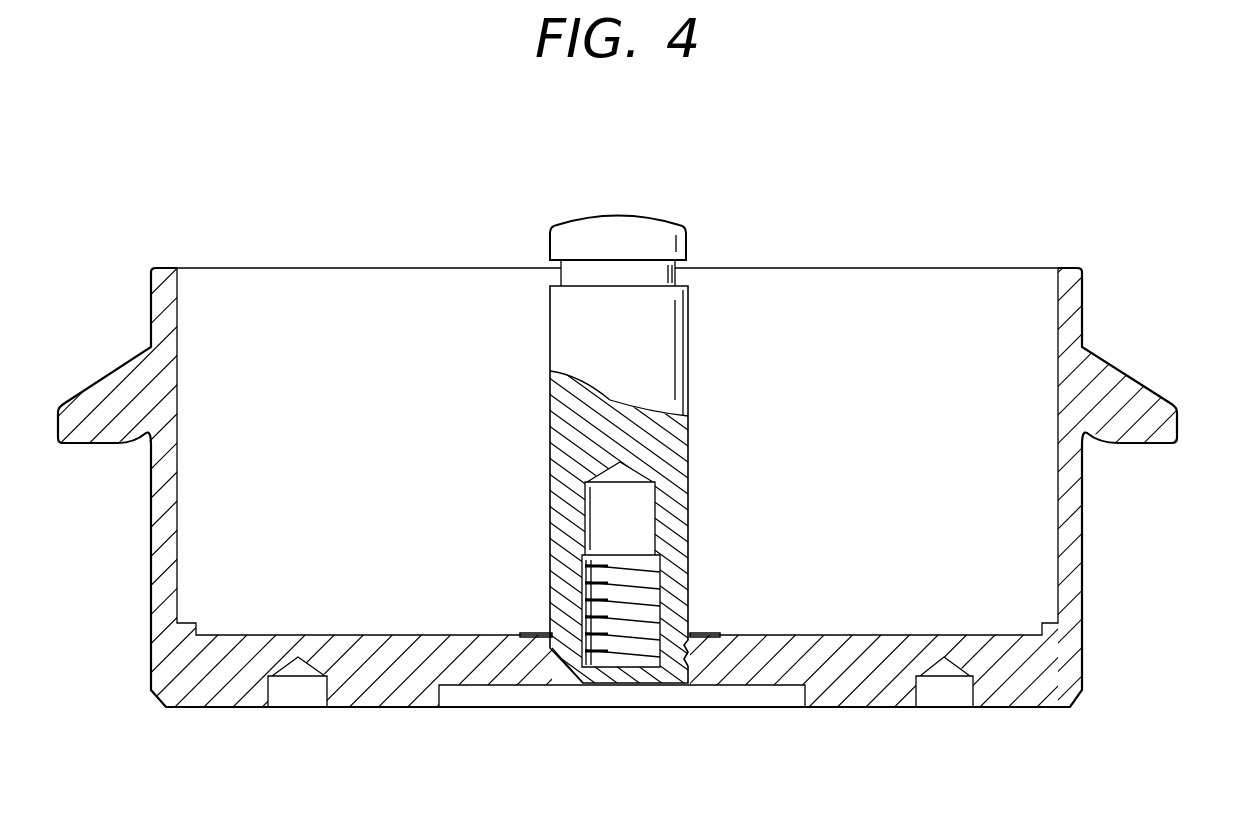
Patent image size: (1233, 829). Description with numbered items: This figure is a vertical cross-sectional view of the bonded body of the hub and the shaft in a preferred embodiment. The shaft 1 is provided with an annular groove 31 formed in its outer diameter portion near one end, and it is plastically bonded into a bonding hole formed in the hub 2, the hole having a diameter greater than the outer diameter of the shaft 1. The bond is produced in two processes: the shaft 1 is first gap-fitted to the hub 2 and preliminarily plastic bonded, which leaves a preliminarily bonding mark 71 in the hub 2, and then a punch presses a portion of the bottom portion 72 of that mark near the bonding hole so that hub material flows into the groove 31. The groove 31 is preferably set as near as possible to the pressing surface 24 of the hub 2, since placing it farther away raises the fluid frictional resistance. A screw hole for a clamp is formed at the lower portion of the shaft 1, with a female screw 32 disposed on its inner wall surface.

The shaft 1 is at (620, 459).
The hub 2 is at (892, 682).
The pressing surface 24 is at (1133, 378).
The annular groove 31 is at (545, 663).
The female screw 32 is at (594, 624).
The preliminarily bonding mark 71 is at (711, 635).
The bottom portion 72 is at (546, 654).